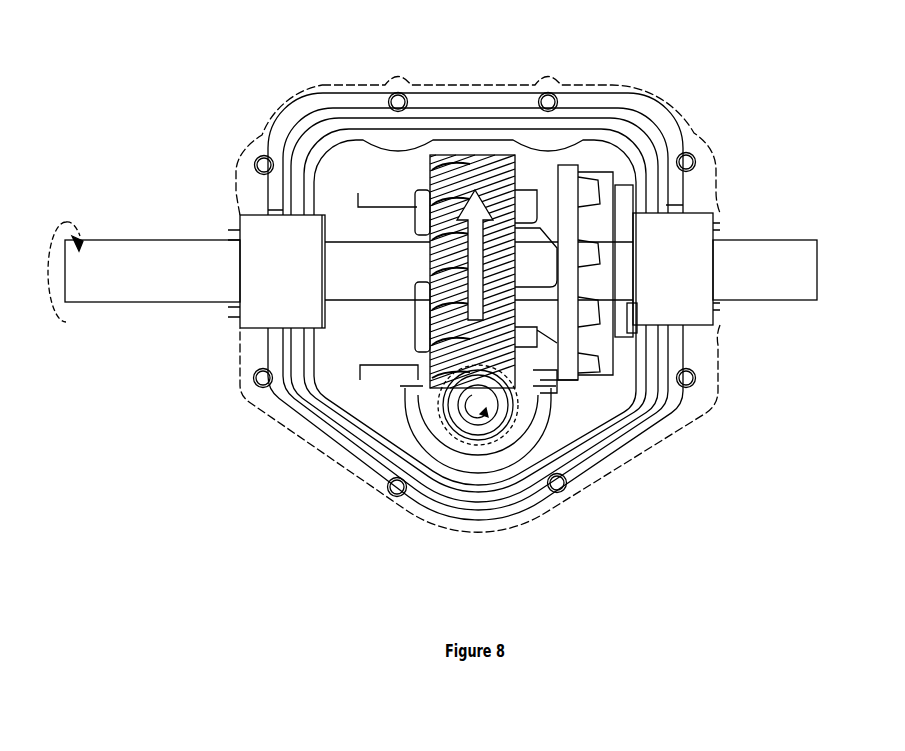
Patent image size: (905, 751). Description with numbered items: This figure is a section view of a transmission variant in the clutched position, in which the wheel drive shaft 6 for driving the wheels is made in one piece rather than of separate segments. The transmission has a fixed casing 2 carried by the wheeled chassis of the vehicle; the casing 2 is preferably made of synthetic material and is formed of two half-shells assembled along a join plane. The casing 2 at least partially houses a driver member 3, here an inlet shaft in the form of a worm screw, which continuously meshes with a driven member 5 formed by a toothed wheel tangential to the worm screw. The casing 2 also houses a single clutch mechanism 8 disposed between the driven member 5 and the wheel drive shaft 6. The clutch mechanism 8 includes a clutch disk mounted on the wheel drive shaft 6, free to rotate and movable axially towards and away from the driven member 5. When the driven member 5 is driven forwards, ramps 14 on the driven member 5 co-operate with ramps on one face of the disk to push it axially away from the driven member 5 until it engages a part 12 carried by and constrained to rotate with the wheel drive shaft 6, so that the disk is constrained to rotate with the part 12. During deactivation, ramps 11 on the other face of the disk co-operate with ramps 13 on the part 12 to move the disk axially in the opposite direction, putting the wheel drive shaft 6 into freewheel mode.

The casing 2 is at (475, 537).
The driver member 3 is at (503, 430).
The driven member 5 is at (473, 160).
The wheel drive shaft 6 is at (168, 303).
The clutch mechanism 8 is at (570, 367).
The ramps 11 is at (583, 185).
The part 12 is at (623, 205).
The ramps 13 is at (603, 172).
The ramps 14 is at (527, 222).